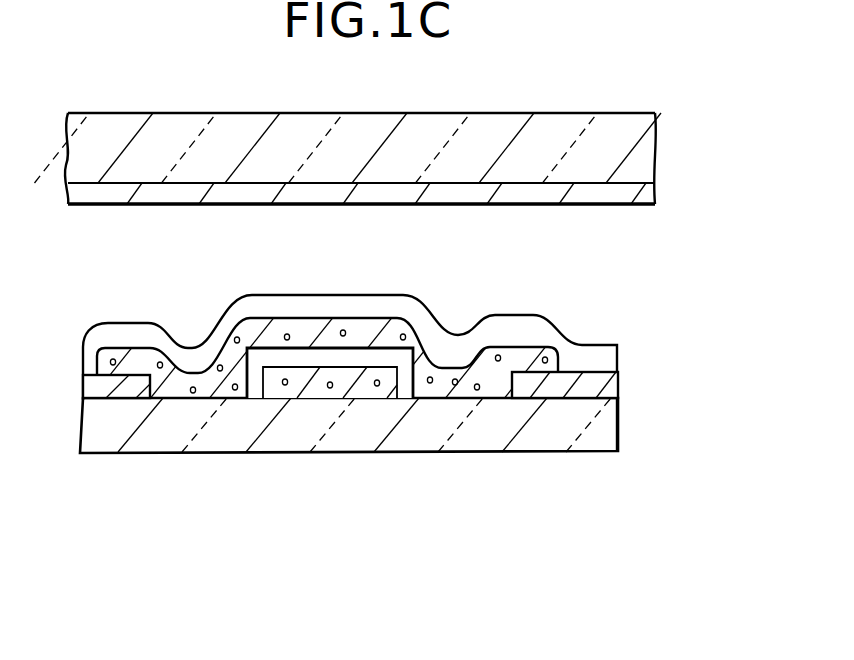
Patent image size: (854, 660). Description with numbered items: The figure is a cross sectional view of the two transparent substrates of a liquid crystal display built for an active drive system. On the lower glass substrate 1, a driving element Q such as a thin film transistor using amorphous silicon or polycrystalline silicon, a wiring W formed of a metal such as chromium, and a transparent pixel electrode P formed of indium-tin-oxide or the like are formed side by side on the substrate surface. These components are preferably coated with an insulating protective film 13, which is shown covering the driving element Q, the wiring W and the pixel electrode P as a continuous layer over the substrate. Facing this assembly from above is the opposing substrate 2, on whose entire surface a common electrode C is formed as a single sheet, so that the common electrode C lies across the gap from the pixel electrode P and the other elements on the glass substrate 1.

The glass substrate 1 is at (605, 428).
The opposing substrate 2 is at (640, 152).
The common electrode C is at (630, 190).
The wiring W is at (130, 387).
The driving element Q is at (342, 310).
The insulating protective film 13 is at (460, 338).
The transparent pixel electrode P is at (580, 383).